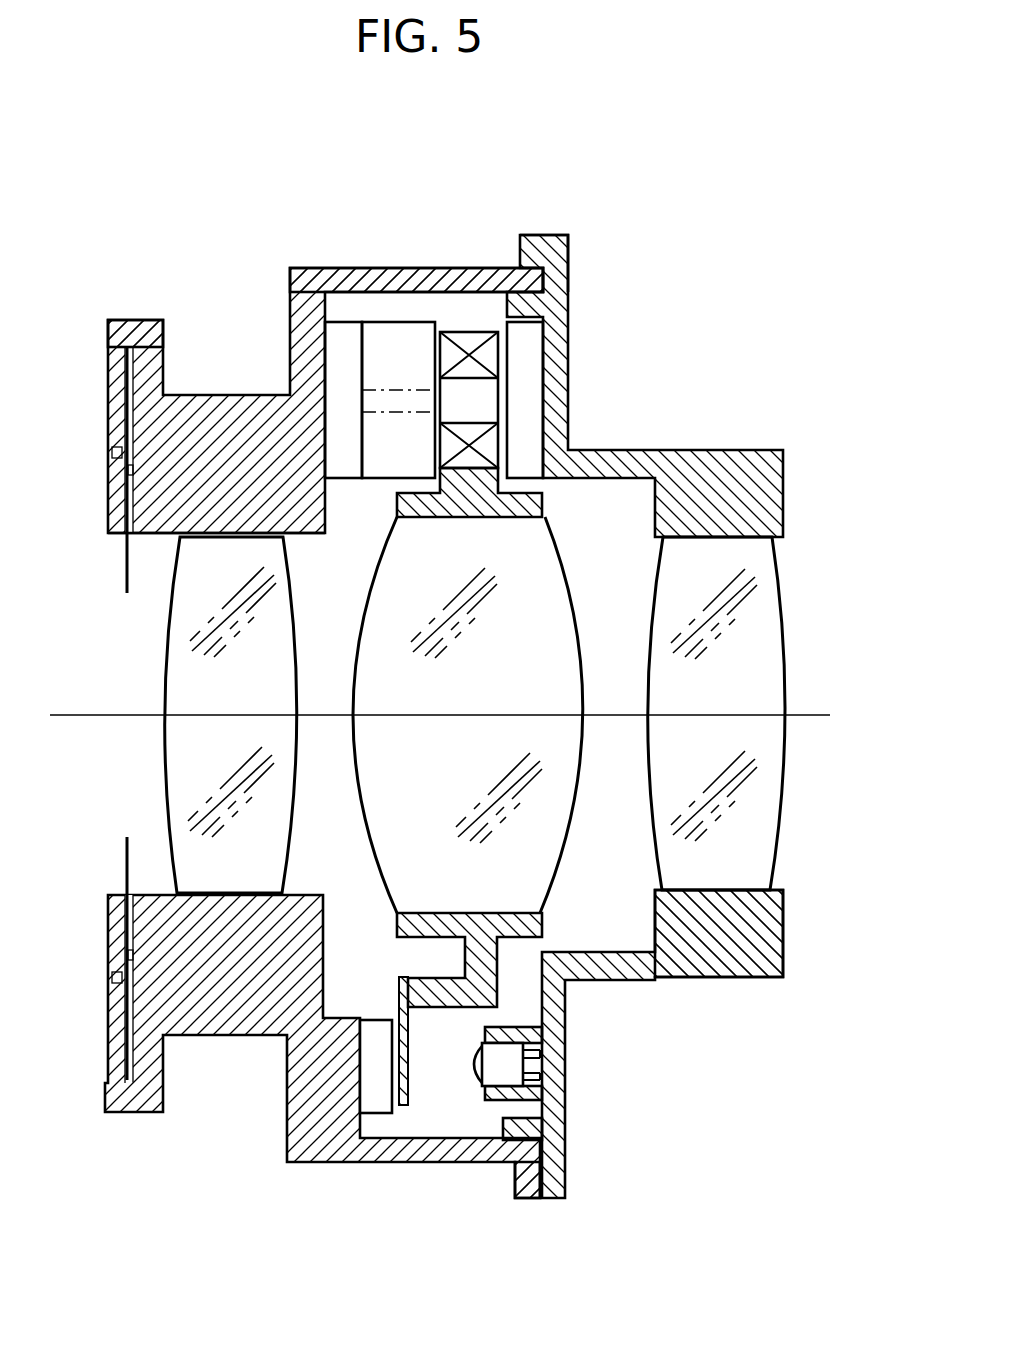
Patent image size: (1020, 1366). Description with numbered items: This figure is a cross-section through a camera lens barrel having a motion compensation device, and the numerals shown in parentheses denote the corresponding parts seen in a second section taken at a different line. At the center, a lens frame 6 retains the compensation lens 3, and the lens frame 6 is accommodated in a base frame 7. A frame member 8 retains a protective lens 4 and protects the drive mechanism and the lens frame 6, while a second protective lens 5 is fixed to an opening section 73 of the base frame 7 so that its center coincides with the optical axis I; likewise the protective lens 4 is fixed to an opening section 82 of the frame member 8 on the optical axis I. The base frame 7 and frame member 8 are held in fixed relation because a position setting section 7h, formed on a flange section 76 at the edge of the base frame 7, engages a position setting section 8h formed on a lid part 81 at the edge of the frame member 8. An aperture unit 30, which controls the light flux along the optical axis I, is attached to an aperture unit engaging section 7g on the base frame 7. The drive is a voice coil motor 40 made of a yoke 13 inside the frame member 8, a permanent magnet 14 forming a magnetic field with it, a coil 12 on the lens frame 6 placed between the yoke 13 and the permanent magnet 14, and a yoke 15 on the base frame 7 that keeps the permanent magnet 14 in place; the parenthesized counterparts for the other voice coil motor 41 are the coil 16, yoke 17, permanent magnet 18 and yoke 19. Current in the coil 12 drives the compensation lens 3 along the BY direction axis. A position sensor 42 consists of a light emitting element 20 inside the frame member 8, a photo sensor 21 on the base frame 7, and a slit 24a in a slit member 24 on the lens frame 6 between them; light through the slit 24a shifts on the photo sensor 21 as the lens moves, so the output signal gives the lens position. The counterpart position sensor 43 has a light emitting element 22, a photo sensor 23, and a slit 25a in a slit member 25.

The compensation lens 3 is at (535, 560).
The protective lens 4 is at (765, 588).
The protective lens 5 is at (183, 660).
The lens frame 6 is at (548, 497).
The base frame 7 is at (223, 417).
The aperture unit engaging section 7g is at (129, 350).
The position setting section 7h is at (545, 1170).
The frame member 8 is at (572, 255).
The position setting section 8h is at (520, 1125).
The lid part 81 is at (568, 280).
The opening section 82 is at (752, 888).
The coil 12 is at (512, 325).
The coil 16 is at (470, 338).
The yoke 13 is at (605, 386).
The yoke 17 is at (522, 353).
The permanent magnet 14 is at (414, 330).
The magnet 18 is at (398, 347).
The yoke 15 is at (312, 330).
The yoke 19 is at (345, 350).
The light emitting element 20 is at (581, 1063).
The light emitting element 22 is at (503, 1063).
The photo sensor 21 is at (356, 1129).
The photo sensor 23 is at (378, 1098).
The slit member 24 is at (449, 1128).
The slit member 25 is at (400, 1090).
The slit 24a is at (559, 1041).
The plate portion of light shielding plate 25a is at (408, 1033).
The aperture unit 30 is at (118, 423).
The voice coil motor 40 is at (490, 227).
The voice coil motor 41 is at (428, 310).
The position sensor 42 is at (488, 1168).
The position sensor 43 is at (461, 1105).
The opening section 73 is at (157, 540).
The flange section 76 is at (361, 300).
The optical axis I is at (812, 712).